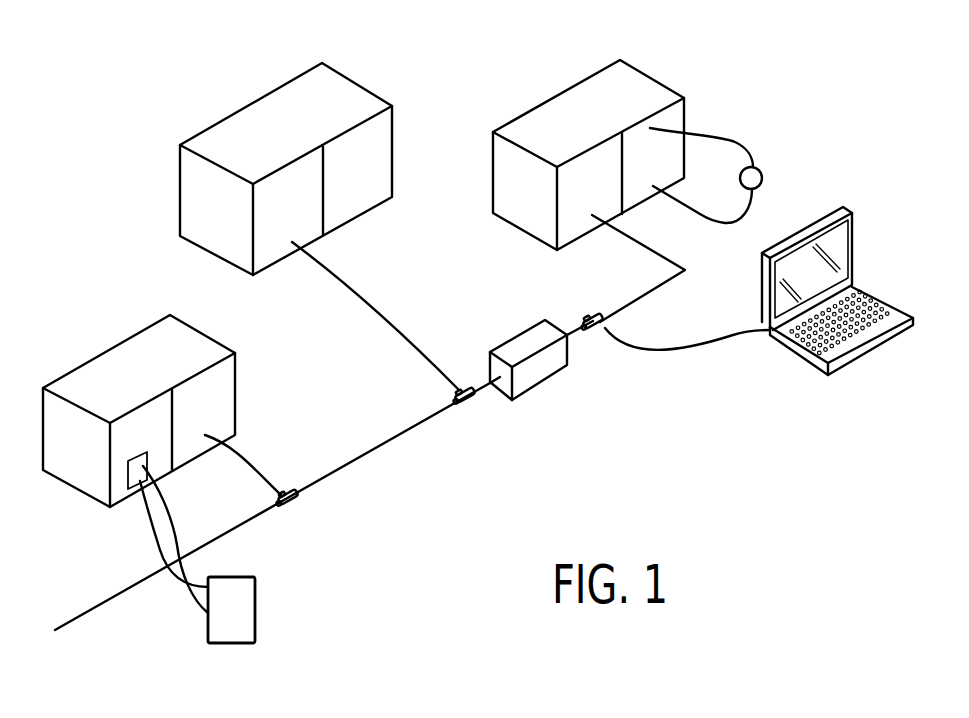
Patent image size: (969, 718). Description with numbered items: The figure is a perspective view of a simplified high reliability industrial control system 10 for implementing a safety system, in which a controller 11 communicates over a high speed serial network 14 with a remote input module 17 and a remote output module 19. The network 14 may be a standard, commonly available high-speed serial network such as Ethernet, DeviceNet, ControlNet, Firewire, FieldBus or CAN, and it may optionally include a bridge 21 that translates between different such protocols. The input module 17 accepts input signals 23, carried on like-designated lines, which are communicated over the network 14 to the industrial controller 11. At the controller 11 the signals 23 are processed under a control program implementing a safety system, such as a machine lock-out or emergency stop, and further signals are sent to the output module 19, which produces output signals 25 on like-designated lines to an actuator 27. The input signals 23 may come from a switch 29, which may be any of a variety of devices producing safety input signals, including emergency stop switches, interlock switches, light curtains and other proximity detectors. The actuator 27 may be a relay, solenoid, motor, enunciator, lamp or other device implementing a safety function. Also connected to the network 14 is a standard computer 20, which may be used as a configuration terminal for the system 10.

The high reliability industrial control system 10 is at (121, 86).
The controller 11 is at (250, 103).
The high speed serial network 14 is at (385, 443).
The remote input module 17 is at (107, 352).
The remote output module 19 is at (555, 95).
The standard computer 20 is at (853, 248).
The bridge 21 is at (538, 385).
The input signals 23 is at (167, 533).
The output signals 25 is at (710, 217).
The actuator 27 is at (762, 177).
The switch 29 is at (255, 610).